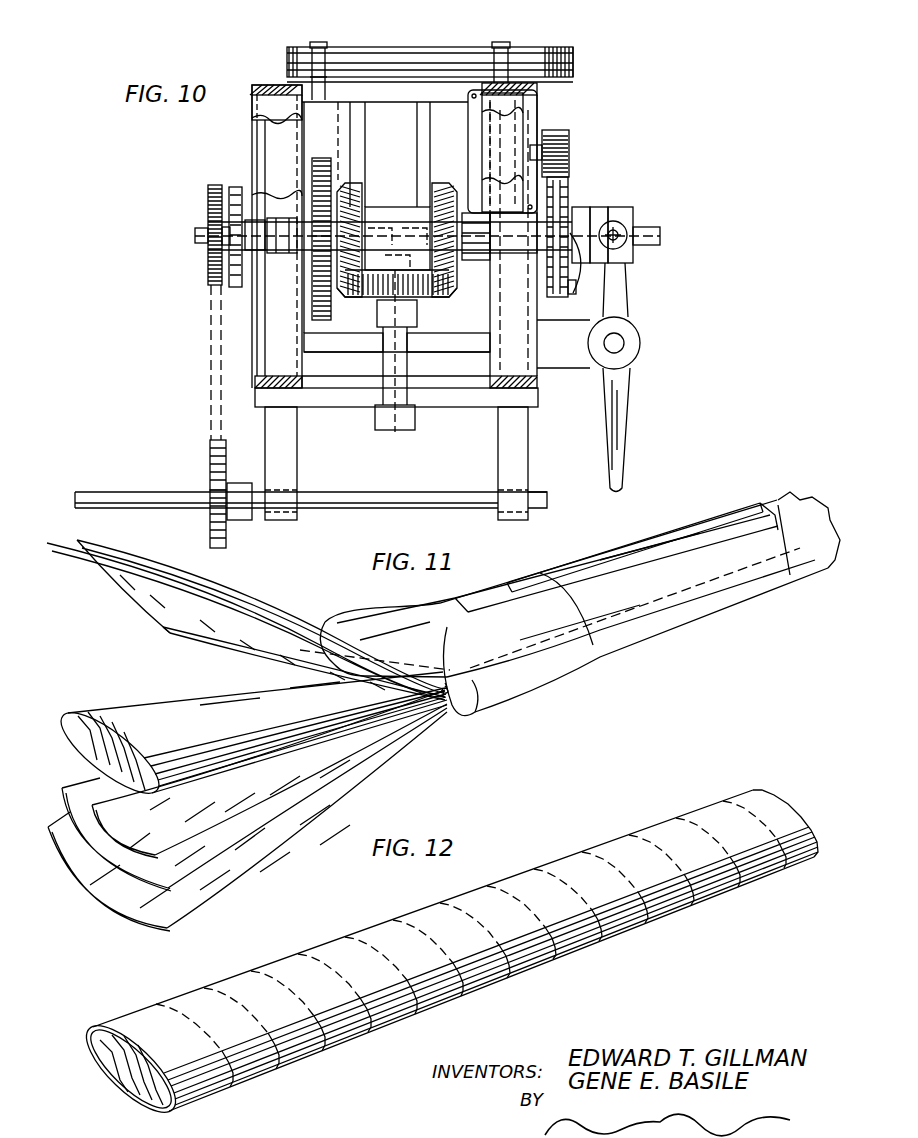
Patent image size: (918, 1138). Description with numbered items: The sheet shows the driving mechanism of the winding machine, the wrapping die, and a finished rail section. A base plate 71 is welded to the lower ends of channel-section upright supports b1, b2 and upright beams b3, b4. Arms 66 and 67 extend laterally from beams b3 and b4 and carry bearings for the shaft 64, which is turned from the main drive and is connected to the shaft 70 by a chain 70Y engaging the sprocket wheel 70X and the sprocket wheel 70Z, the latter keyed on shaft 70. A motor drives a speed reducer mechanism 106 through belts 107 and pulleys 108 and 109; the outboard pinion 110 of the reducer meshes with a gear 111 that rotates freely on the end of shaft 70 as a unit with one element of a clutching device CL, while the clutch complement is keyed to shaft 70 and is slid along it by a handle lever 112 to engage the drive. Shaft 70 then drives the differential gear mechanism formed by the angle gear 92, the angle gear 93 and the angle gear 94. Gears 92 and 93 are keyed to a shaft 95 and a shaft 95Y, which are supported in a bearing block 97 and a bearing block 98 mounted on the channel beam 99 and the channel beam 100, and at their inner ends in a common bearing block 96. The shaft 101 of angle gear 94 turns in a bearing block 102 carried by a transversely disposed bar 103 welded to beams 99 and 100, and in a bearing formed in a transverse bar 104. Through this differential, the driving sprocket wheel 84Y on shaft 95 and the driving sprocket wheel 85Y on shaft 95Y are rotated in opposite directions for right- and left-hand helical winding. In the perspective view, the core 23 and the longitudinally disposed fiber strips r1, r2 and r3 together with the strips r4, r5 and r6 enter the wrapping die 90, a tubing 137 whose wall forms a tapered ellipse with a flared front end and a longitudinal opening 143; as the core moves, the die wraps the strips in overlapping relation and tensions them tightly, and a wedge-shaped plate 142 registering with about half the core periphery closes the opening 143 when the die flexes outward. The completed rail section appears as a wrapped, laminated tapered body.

In FIG. 10, the belts 107 is at (577, 66).
In FIG. 10, the pulley 108 is at (340, 48).
In FIG. 10, the pulley 109 is at (562, 48).
In FIG. 10, the base plate 71 is at (272, 92).
In FIG. 10, the upright support b1 is at (254, 84).
In FIG. 10, the upright support b2 is at (537, 84).
In FIG. 10, the upright beam b3 is at (537, 380).
In FIG. 10, the upright beam b4 is at (262, 382).
In FIG. 10, the channel beam 99 is at (268, 330).
In FIG. 10, the transverse bar 104 is at (327, 398).
In FIG. 10, the arm 66 is at (288, 520).
In FIG. 10, the arm 67 is at (520, 515).
In FIG. 10, the shaft 64 is at (102, 506).
In FIG. 10, the shaft 70 is at (195, 234).
In FIG. 10, the bearing block 97 is at (273, 283).
In FIG. 10, the shaft 95 is at (220, 243).
In FIG. 10, the sprocket wheel 70Z is at (207, 197).
In FIG. 10, the driving sprocket wheel 84Y is at (232, 187).
In FIG. 10, the angle gear 92 is at (345, 195).
In FIG. 10, the angle gear 93 is at (450, 187).
In FIG. 10, the common bearing block 96 is at (403, 213).
In FIG. 10, the angle gear 94 is at (363, 293).
In FIG. 10, the bearing block 98 is at (505, 253).
In FIG. 10, the channel beam 100 is at (518, 305).
In FIG. 10, the speed reducer mechanism 106 is at (515, 122).
In FIG. 10, the outboard pinion 110 is at (563, 130).
In FIG. 10, the driving sprocket wheel 85Y is at (567, 187).
In FIG. 10, the clutching device CL is at (620, 207).
In FIG. 10, the shaft 95Y is at (606, 262).
In FIG. 10, the gear 111 is at (567, 283).
In FIG. 10, the handle lever 112 is at (620, 398).
In FIG. 10, the shaft 101 is at (397, 432).
In FIG. 10, the bearing block 102 is at (377, 342).
In FIG. 10, the transversely disposed bar 103 is at (447, 340).
In FIG. 10, the chain 70Y is at (212, 472).
In FIG. 10, the sprocket wheel 70X is at (212, 518).
In FIG. 11, the fiber strip r1 is at (93, 570).
In FIG. 11, the fiber strip r2 is at (125, 587).
In FIG. 11, the fiber strip r3 is at (197, 600).
In FIG. 11, the core 23 is at (108, 715).
In FIG. 11, the strip r4 is at (222, 853).
In FIG. 11, the strip r5 is at (252, 808).
In FIG. 11, the strip r6 is at (260, 763).
In FIG. 11, the wrapping die 90 is at (645, 666).
In FIG. 11, the wedge-shaped plate 142 is at (610, 557).
In FIG. 11, the tubing 137 is at (693, 507).
In FIG. 11, the longitudinal opening 143 is at (760, 510).